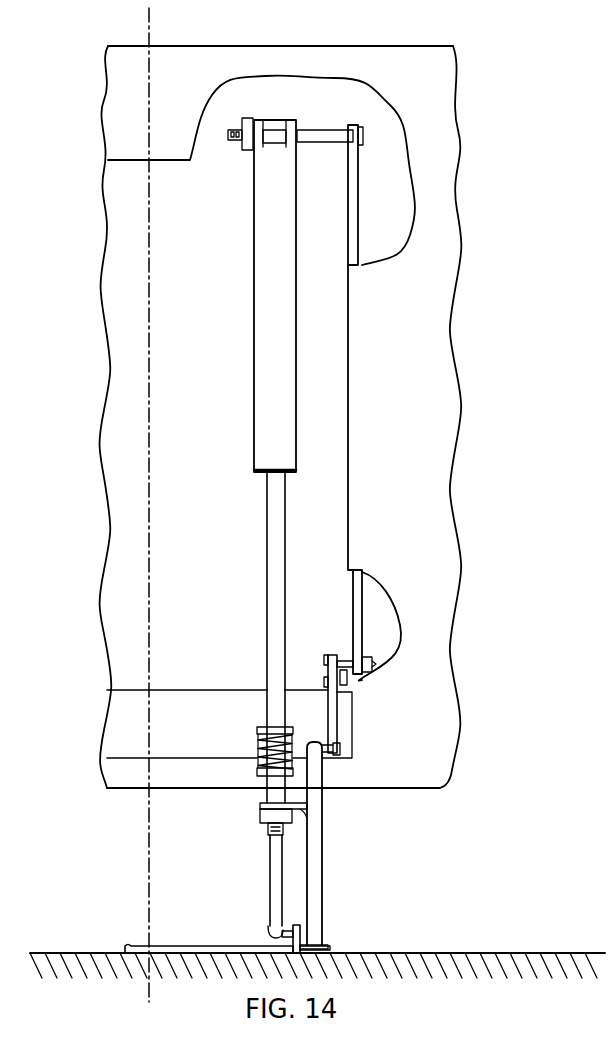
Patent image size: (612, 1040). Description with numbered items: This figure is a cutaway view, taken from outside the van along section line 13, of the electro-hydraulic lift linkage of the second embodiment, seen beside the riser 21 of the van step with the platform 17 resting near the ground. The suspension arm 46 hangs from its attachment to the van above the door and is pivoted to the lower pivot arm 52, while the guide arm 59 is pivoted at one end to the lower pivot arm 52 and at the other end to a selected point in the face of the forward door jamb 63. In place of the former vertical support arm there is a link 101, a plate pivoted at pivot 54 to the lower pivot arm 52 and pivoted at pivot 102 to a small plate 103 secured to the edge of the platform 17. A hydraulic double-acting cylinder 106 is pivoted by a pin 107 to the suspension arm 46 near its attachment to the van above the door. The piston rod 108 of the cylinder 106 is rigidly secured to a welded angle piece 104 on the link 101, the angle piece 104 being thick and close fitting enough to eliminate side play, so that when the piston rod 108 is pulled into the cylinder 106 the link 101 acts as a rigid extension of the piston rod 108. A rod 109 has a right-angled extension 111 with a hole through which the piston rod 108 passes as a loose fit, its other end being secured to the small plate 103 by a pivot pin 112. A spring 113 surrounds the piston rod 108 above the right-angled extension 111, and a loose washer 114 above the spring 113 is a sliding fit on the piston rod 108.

The section line 13 is at (146, 25).
The platform 17 is at (173, 948).
The riser 21 is at (171, 702).
The suspension arm 46 is at (350, 207).
The lower pivot arm 52 is at (330, 710).
The pivot 54 is at (347, 750).
The guide arm 59 is at (350, 678).
The forward door jamb 63 is at (348, 354).
The link 101 is at (315, 847).
The pivot 102 is at (324, 941).
The small plate 103 is at (302, 950).
The angle piece 104 is at (262, 805).
The hydraulic double-acting cylinder 106 is at (268, 305).
The pin 107 is at (318, 128).
The piston rod 108 is at (272, 533).
The rod 109 is at (273, 878).
The right-angled extension 111 is at (262, 770).
The pivot pin 112 is at (267, 930).
The spring 113 is at (260, 745).
The loose washer 114 is at (263, 728).